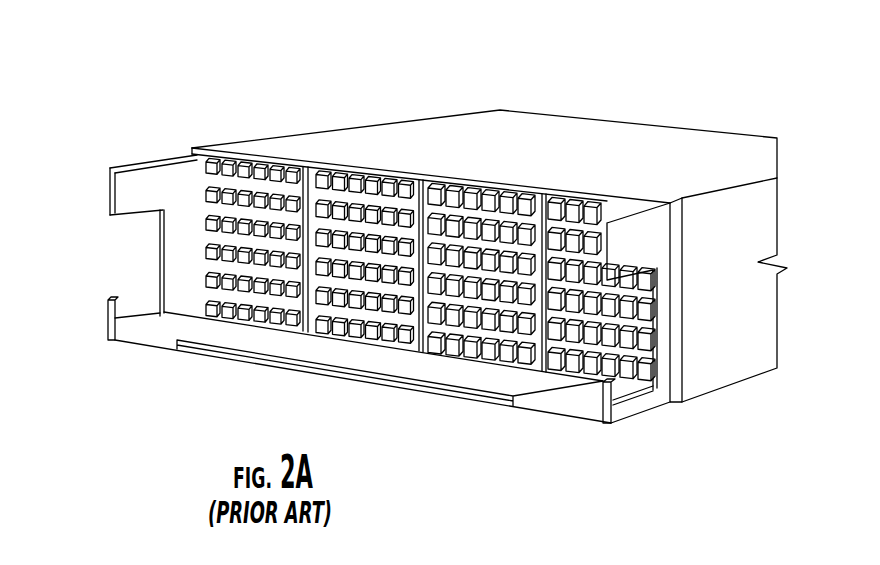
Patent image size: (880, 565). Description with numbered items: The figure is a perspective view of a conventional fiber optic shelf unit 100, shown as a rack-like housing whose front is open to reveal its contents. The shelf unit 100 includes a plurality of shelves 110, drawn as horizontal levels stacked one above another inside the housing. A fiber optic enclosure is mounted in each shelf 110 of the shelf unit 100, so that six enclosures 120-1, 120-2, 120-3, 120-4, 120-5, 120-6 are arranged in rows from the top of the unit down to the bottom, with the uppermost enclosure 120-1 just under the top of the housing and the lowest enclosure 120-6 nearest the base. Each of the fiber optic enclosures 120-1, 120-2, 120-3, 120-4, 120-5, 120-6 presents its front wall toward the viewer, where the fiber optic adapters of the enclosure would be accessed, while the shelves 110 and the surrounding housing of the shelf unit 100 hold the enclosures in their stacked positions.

The fiber optic shelf unit 100 is at (329, 53).
The shelf 110 is at (540, 374).
The fiber optic enclosure 120-1 is at (209, 169).
The fiber optic enclosure 120-2 is at (207, 197).
The fiber optic enclosure 120-3 is at (207, 224).
The fiber optic enclosure 120-4 is at (204, 253).
The fiber optic enclosure 120-5 is at (204, 285).
The fiber optic enclosure 120-6 is at (229, 314).